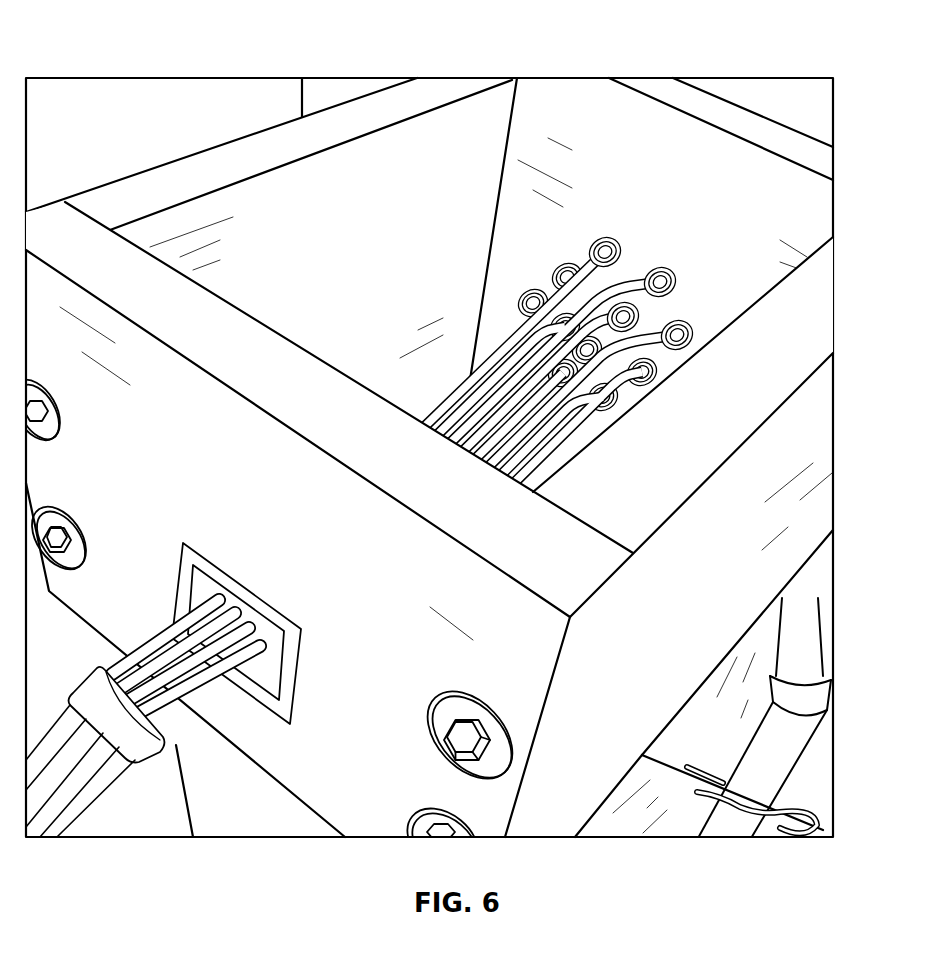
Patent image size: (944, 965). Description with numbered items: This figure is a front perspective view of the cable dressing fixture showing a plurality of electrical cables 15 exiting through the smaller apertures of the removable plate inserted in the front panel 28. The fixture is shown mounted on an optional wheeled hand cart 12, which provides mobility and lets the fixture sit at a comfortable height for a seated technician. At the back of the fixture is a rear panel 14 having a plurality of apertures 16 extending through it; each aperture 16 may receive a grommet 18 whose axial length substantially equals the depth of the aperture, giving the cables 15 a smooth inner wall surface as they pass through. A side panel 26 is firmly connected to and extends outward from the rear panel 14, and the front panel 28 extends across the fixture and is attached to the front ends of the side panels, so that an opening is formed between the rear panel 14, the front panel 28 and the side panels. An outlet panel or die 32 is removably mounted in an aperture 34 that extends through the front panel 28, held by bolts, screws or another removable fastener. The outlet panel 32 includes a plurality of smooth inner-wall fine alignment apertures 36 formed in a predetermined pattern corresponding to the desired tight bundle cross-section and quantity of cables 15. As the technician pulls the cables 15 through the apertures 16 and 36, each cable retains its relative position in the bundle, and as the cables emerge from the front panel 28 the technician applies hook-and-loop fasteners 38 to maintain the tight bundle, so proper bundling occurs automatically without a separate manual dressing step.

The wheeled hand cart 12 is at (782, 759).
The rear panel 14 is at (727, 118).
The cables 15 is at (87, 768).
The apertures 16 is at (670, 267).
The grommet 18 is at (576, 339).
The side panel 26 is at (572, 822).
The front panel 28 is at (245, 157).
The outlet panel 32 is at (271, 660).
The aperture 34 is at (270, 633).
The fine alignment apertures 36 is at (263, 643).
The hook-and-loop fasteners 38 is at (147, 747).